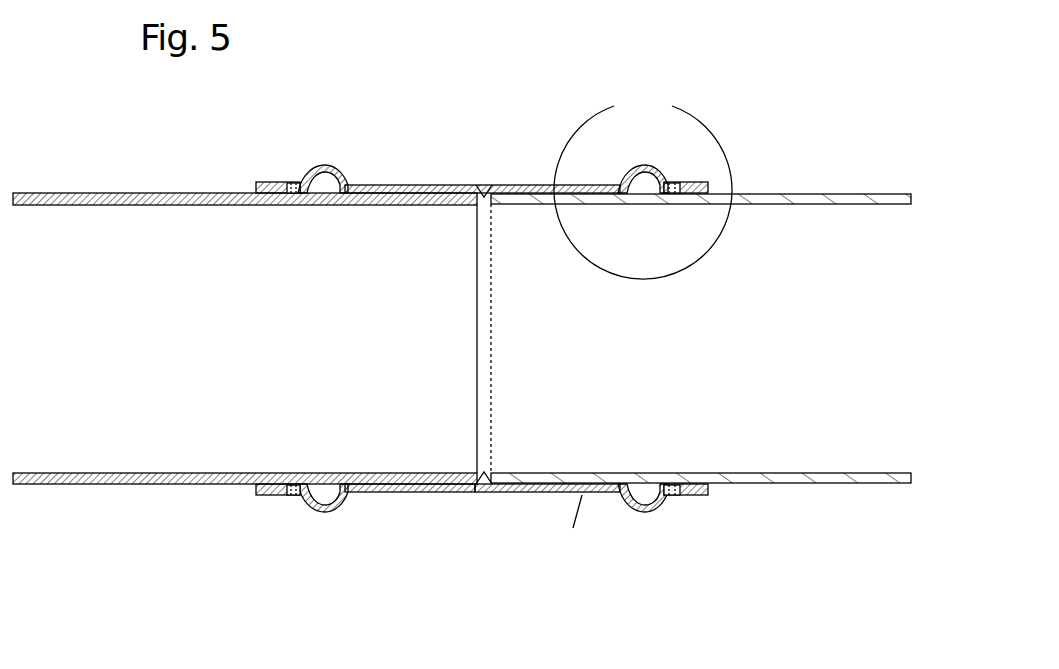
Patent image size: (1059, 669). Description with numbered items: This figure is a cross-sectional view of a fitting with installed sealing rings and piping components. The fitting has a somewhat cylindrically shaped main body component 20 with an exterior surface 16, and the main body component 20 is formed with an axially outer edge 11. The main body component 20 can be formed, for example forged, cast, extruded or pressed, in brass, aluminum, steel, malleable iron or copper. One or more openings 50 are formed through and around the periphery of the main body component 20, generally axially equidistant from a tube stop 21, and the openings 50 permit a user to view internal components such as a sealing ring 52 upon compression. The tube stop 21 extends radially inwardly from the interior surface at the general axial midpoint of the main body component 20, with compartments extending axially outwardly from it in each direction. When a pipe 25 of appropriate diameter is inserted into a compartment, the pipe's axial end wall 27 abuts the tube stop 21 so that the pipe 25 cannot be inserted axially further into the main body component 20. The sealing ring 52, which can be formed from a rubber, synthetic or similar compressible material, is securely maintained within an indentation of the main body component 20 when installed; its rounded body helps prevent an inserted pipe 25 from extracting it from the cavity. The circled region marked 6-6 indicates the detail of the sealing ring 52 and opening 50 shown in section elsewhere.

The axially outer edge 11 is at (255, 188).
The exterior surface 16 is at (445, 497).
The main body component 20 is at (392, 492).
The tube stop 21 is at (474, 277).
The pipe 25 is at (100, 476).
The axial end wall 27 is at (486, 477).
The openings 50 is at (293, 500).
The sealing ring 52 is at (330, 185).
The section line 6-6 is at (688, 110).